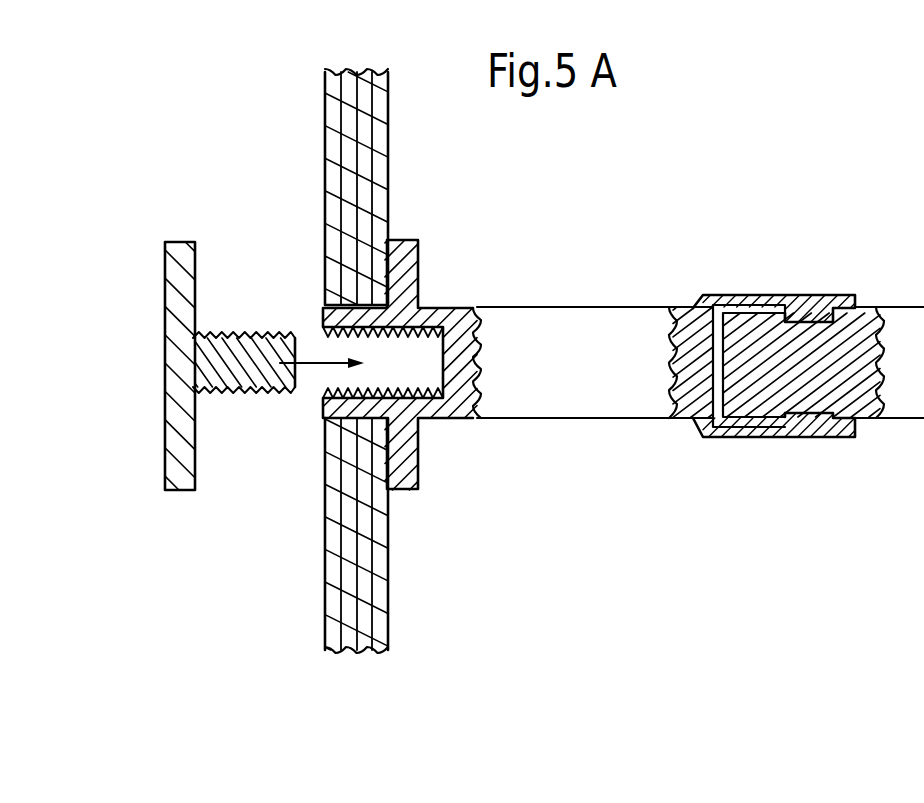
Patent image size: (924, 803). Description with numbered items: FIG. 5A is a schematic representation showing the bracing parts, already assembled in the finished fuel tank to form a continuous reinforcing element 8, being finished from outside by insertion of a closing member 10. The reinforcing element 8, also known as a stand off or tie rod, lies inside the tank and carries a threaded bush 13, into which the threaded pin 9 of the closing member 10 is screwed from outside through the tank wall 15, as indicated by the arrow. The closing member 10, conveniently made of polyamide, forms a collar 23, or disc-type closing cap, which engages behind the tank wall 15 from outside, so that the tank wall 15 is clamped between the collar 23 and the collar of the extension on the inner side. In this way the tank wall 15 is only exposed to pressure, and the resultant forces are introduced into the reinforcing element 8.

The reinforcing element 8 is at (767, 286).
The threaded pin 9 is at (261, 394).
The closing member 10 is at (180, 365).
The threaded bush 13 is at (406, 338).
The tank wall 15 is at (395, 583).
The collar 23 is at (183, 268).